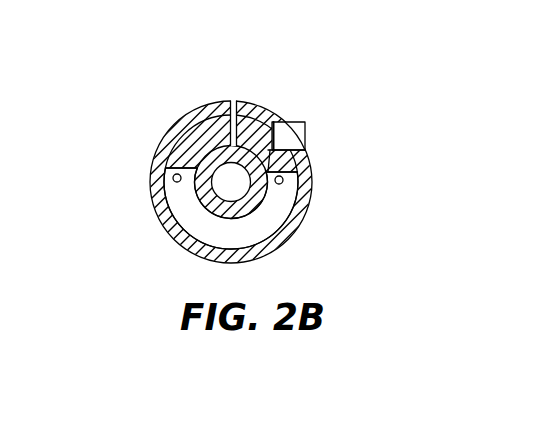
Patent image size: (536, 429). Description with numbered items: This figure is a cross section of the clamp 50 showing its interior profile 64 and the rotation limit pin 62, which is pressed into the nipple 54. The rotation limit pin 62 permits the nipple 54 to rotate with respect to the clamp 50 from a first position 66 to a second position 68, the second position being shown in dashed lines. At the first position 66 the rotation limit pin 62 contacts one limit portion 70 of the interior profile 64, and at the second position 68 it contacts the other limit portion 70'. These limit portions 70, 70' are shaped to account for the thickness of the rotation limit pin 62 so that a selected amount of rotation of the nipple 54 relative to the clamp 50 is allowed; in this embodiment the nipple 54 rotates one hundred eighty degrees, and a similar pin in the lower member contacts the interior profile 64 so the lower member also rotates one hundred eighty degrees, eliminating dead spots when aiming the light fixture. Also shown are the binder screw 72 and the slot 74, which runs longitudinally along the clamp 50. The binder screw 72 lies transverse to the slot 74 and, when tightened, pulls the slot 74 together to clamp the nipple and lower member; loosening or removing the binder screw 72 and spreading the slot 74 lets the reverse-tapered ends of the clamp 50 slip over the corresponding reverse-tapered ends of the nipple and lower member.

The clamp 50 is at (312, 191).
The nipple 54 is at (262, 205).
The rotation limit pin 62 is at (173, 177).
The interior profile 64 is at (212, 102).
The first position 66 is at (177, 159).
The second position 68 is at (283, 177).
The limit portion 70 is at (231, 149).
The limit portion 70' is at (327, 141).
The binder screw 72 is at (302, 121).
The slot 74 is at (237, 102).